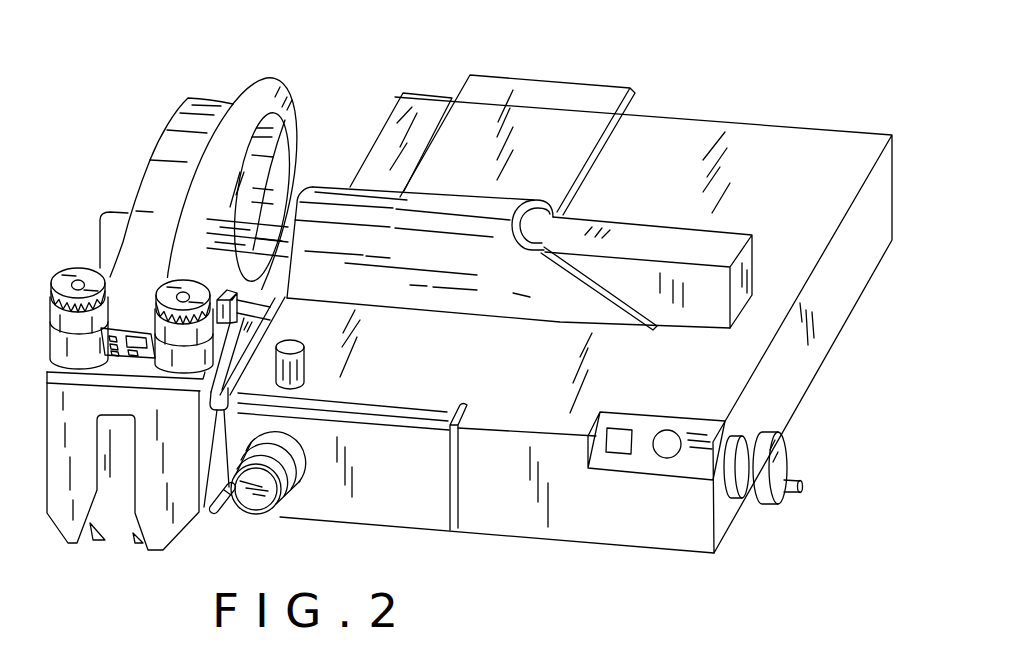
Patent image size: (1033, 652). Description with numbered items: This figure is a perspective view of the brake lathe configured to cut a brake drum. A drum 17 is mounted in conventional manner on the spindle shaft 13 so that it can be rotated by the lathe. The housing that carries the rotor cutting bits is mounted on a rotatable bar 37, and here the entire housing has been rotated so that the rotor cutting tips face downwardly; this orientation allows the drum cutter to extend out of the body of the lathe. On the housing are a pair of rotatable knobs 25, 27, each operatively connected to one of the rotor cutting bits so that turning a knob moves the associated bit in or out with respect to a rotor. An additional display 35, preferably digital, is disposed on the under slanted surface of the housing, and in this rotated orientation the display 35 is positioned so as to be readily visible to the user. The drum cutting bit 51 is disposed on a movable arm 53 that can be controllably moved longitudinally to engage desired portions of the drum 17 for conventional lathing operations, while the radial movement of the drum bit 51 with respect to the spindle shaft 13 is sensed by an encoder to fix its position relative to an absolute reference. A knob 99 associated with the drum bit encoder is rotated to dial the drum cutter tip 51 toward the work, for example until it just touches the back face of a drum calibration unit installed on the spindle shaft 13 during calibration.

The drum 17 is at (243, 90).
The spindle shaft 13 is at (284, 138).
The movable arm 53 is at (302, 191).
The rotatable knob 25 is at (167, 290).
The display 35 is at (132, 328).
The rotatable knob 27 is at (63, 272).
The drum cutting bit 51 is at (220, 333).
The rotatable bar 37 is at (202, 521).
The knob 99 is at (264, 516).